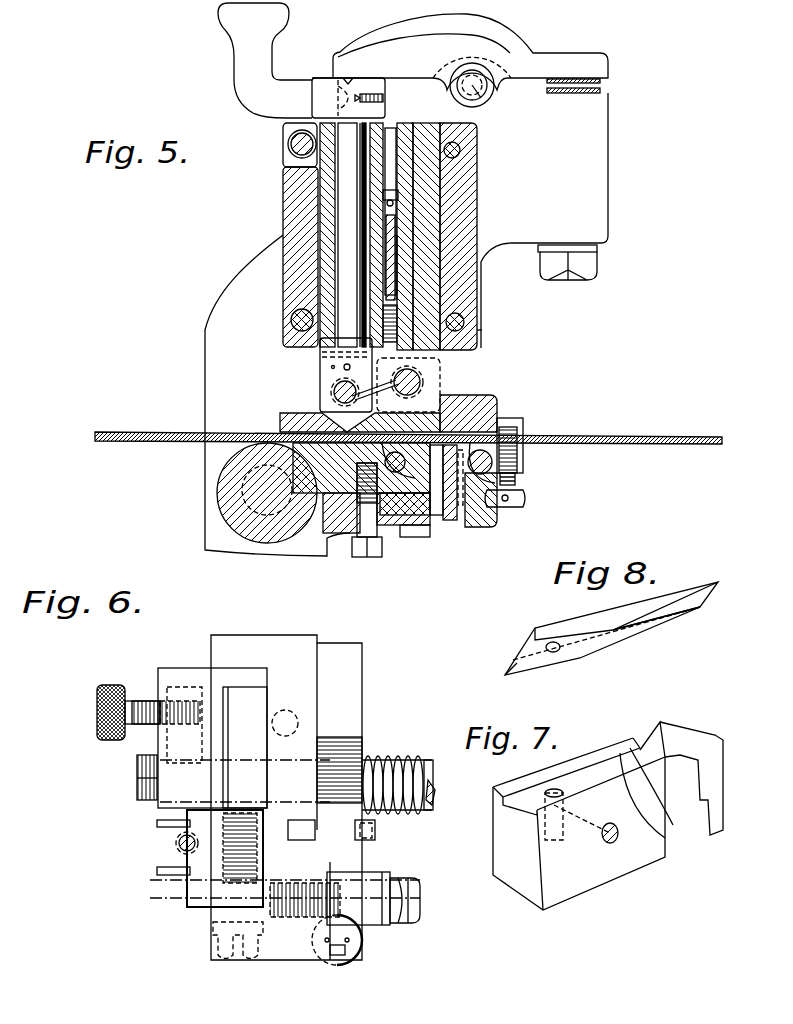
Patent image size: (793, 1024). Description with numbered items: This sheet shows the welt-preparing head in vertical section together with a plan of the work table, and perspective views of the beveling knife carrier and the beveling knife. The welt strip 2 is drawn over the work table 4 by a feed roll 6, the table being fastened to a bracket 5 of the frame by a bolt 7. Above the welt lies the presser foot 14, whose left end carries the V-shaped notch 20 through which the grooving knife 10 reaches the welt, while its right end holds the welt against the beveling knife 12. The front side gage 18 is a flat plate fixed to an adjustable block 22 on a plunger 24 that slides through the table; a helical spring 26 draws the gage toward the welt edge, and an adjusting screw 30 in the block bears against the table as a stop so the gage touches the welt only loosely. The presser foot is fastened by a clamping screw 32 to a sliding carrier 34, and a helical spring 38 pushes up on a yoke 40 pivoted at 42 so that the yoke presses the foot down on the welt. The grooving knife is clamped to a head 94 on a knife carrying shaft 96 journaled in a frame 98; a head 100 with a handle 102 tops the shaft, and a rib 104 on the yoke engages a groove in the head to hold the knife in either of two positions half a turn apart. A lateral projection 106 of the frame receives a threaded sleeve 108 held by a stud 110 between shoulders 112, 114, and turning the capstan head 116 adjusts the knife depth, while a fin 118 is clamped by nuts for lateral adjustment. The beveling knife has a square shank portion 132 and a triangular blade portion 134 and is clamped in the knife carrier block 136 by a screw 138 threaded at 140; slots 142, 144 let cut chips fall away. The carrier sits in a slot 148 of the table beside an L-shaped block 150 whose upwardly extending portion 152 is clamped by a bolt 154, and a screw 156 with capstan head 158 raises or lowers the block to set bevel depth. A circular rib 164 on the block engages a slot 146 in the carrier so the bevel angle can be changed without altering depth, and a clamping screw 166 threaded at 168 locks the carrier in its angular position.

In FIG. 5, the welt strip 2 is at (408, 425).
In FIG. 5, the work table 4 is at (296, 505).
In FIG. 6, the work table 4 is at (295, 642).
In FIG. 5, the bracket 5 is at (405, 523).
In FIG. 5, the feed roll 6 is at (230, 502).
In FIG. 5, the bolt 7 is at (373, 557).
In FIG. 5, the grooving knife 10 is at (410, 398).
In FIG. 5, the beveling knife 12 is at (458, 430).
In FIG. 6, the beveling knife 12 is at (167, 836).
In FIG. 8, the beveling knife 12 is at (720, 592).
In FIG. 5, the presser foot 14 is at (445, 398).
In FIG. 6, the front side gage 18 is at (193, 895).
In FIG. 5, the notch 20 is at (312, 415).
In FIG. 6, the adjustable block 22 is at (165, 693).
In FIG. 5, the plunger 24 is at (462, 410).
In FIG. 6, the plunger 24 is at (437, 786).
In FIG. 6, the helical spring 26 is at (398, 760).
In FIG. 6, the adjusting screw 30 is at (98, 715).
In FIG. 5, the clamping screw 32 is at (415, 380).
In FIG. 5, the sliding carrier 34 is at (457, 298).
In FIG. 5, the helical spring 38 is at (597, 89).
In FIG. 5, the yoke 40 is at (507, 35).
In FIG. 5, the pivot 42 is at (490, 93).
In FIG. 5, the head 94 is at (333, 367).
In FIG. 5, the knife carrying shaft 96 is at (345, 288).
In FIG. 5, the frame 98 is at (328, 219).
In FIG. 5, the head 100 is at (323, 87).
In FIG. 5, the handle 102 is at (246, 67).
In FIG. 5, the rib 104 is at (355, 73).
In FIG. 5, the lateral projection 106 is at (410, 258).
In FIG. 5, the sleeve 108 is at (400, 205).
In FIG. 5, the stud 110 is at (386, 142).
In FIG. 5, the shoulder 112 is at (398, 187).
In FIG. 5, the shoulder 114 is at (477, 335).
In FIG. 5, the capstan head 116 is at (418, 203).
In FIG. 5, the fin 118 is at (318, 122).
In FIG. 8, the shank portion 132 is at (517, 657).
In FIG. 6, the blade portion 134 is at (372, 833).
In FIG. 8, the blade portion 134 is at (665, 625).
In FIG. 5, the knife carrier block 136 is at (447, 515).
In FIG. 6, the knife carrier block 136 is at (387, 822).
In FIG. 7, the knife carrier block 136 is at (563, 893).
In FIG. 6, the screw 138 is at (182, 843).
In FIG. 7, the threaded hole 140 is at (555, 795).
In FIG. 5, the slot 142 is at (470, 505).
In FIG. 6, the slot 142 is at (305, 872).
In FIG. 7, the slot 142 is at (687, 837).
In FIG. 5, the slot 144 is at (410, 540).
In FIG. 6, the slot 144 is at (305, 820).
In FIG. 7, the slot 144 is at (647, 740).
In FIG. 7, the slot 146 is at (652, 820).
In FIG. 5, the slot 148 is at (433, 532).
In FIG. 5, the L-shaped block 150 is at (497, 523).
In FIG. 6, the upwardly extending portion 152 is at (372, 880).
In FIG. 5, the bolt 154 is at (492, 457).
In FIG. 6, the bolt 154 is at (403, 907).
In FIG. 5, the screw 156 is at (520, 480).
In FIG. 6, the screw 156 is at (335, 948).
In FIG. 5, the capstan head 158 is at (523, 503).
In FIG. 6, the capstan head 158 is at (363, 943).
In FIG. 5, the circular rib 164 is at (463, 492).
In FIG. 6, the clamping screw 166 is at (220, 947).
In FIG. 7, the threaded hole 168 is at (610, 845).